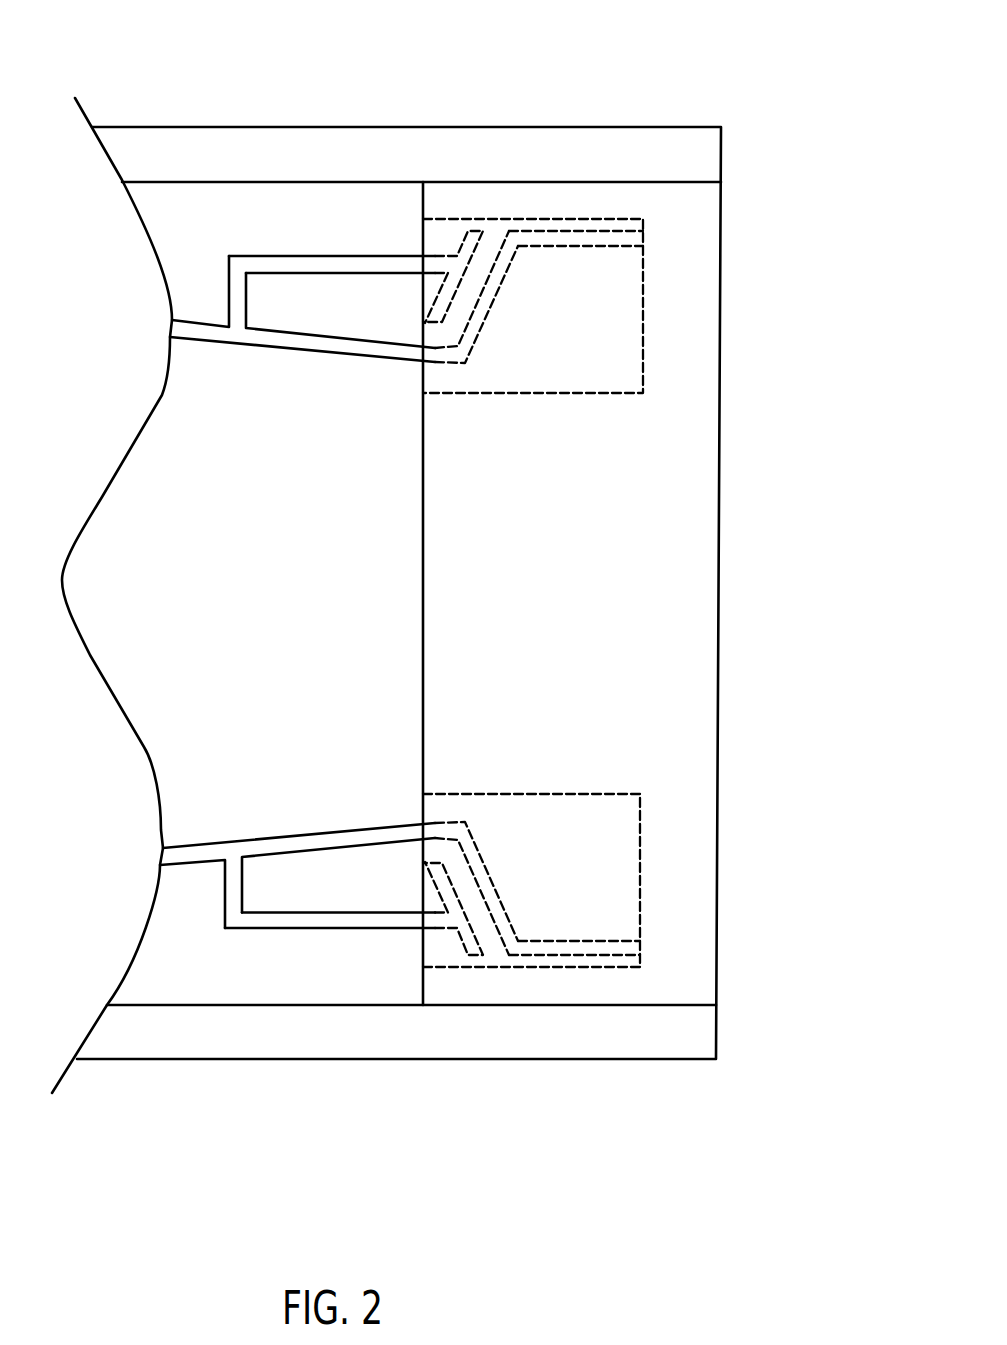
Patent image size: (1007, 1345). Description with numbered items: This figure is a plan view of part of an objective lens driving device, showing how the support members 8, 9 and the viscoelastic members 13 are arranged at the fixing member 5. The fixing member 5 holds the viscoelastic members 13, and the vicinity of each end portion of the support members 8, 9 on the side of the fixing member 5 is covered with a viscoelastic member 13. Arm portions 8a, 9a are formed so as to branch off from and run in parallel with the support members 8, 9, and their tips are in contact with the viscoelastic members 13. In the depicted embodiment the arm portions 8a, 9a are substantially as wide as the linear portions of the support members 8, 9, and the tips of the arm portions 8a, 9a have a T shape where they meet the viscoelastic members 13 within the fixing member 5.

The fixing member 5 is at (685, 267).
The support member 8 is at (302, 181).
The arm portion 8a is at (390, 263).
The support member 9 is at (297, 998).
The arm portion 9a is at (358, 918).
The viscoelastic member 13 is at (578, 263).